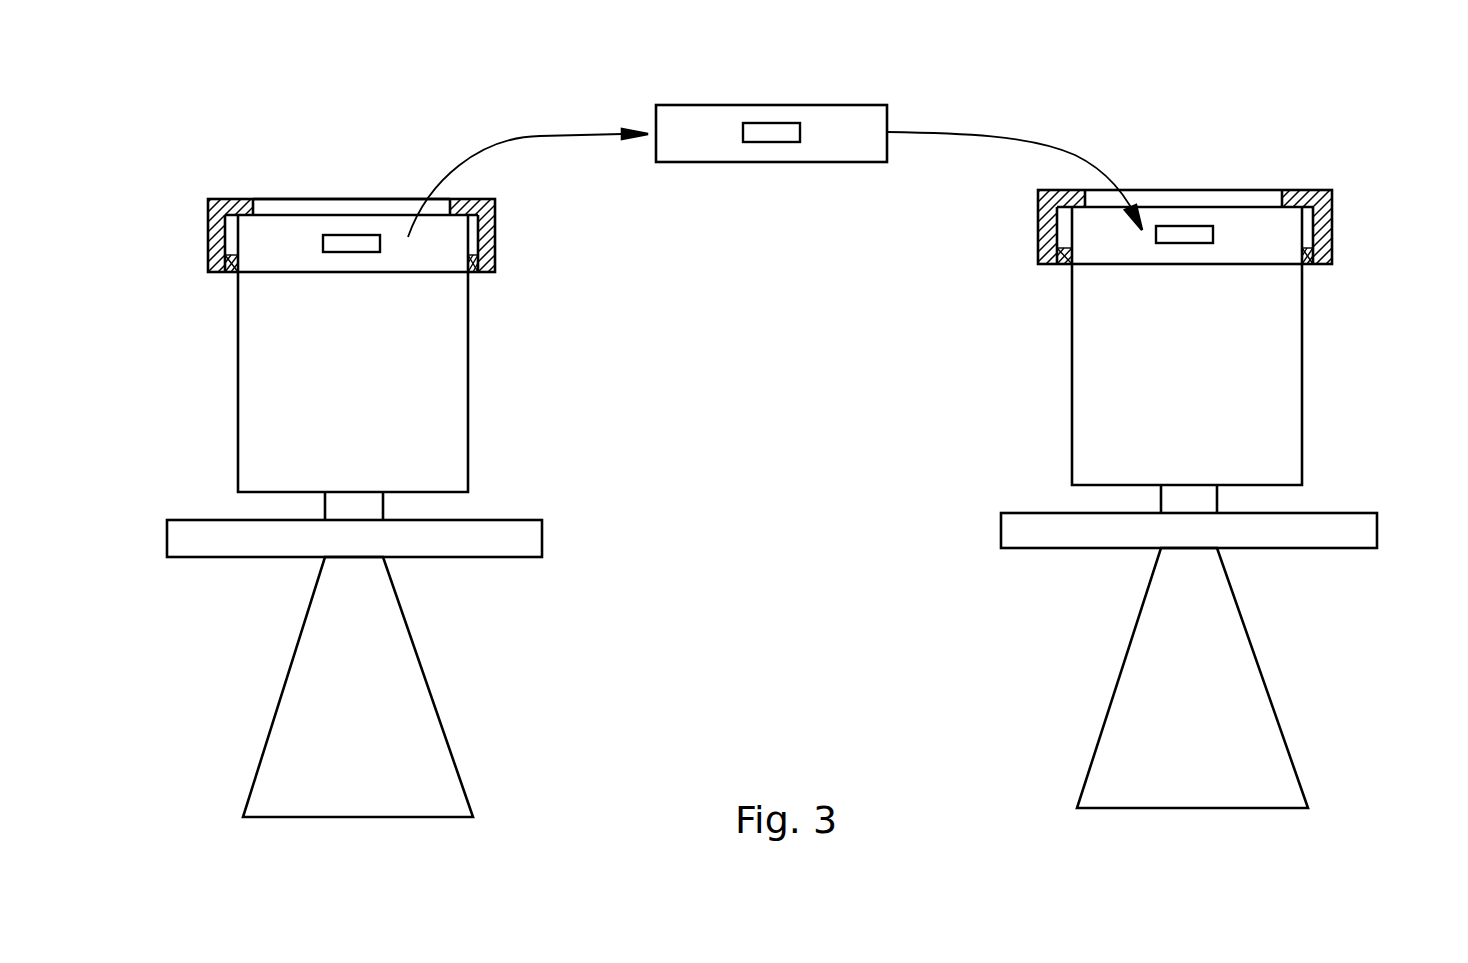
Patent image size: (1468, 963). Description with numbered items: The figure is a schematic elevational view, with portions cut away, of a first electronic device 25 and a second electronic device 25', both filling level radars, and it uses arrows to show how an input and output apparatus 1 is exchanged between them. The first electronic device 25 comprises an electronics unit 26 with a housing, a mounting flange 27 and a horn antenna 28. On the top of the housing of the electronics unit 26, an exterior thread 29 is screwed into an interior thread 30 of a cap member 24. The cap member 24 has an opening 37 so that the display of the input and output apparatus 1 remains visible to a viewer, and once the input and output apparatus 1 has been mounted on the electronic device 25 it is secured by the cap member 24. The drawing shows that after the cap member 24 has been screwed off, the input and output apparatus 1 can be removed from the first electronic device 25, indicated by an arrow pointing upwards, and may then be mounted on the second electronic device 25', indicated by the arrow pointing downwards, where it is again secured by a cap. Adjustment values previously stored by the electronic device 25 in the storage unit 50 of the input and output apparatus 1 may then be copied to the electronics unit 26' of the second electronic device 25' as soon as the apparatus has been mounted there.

The input and output apparatus 1 is at (348, 237).
The storage unit 50 is at (323, 237).
The cap member 24 is at (210, 220).
The opening 37 is at (267, 207).
The electronic device 25 is at (350, 452).
The second electronic device 25' is at (1186, 499).
The electronics unit 26 is at (426, 367).
The electronics unit of the second electronic device 26' is at (1264, 346).
The mounting flange 27 is at (235, 543).
The horn antenna 28 is at (312, 729).
The exterior thread 29 is at (233, 273).
The interior thread 30 is at (470, 273).